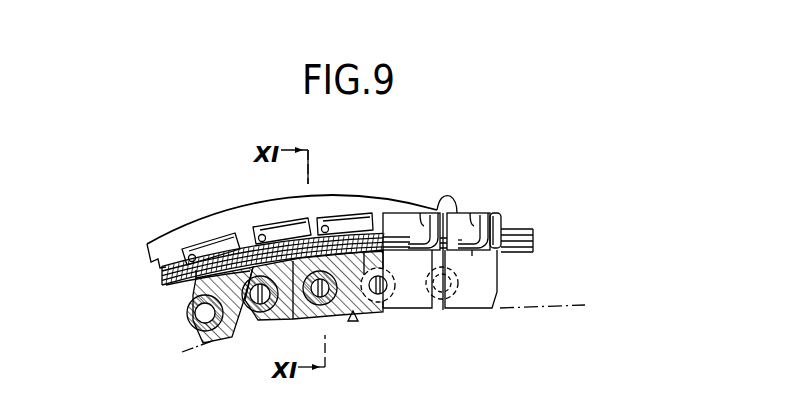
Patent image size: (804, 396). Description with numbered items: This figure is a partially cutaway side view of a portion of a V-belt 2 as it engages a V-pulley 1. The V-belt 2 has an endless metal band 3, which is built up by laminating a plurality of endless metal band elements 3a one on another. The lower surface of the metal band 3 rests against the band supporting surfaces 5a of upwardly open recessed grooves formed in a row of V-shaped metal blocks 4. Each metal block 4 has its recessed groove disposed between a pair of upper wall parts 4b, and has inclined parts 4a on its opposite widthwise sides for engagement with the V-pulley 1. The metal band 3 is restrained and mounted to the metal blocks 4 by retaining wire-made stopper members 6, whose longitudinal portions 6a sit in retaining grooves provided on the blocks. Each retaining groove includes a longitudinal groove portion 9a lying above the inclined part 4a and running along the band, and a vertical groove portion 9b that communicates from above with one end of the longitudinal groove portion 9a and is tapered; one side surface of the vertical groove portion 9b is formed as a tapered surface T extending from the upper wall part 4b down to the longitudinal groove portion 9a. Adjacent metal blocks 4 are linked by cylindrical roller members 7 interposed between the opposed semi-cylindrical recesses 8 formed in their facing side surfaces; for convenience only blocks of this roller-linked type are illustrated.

The V-pulley 1 is at (228, 214).
The V-belt 2 is at (272, 222).
The endless metal band 3 is at (168, 289).
The endless metal band elements 3a is at (168, 295).
The V-shaped metal block 4 is at (397, 230).
The inclined part 4a is at (405, 300).
The upper wall part 4b is at (420, 212).
The band supporting surface 5a is at (293, 319).
The stopper member 6 is at (493, 214).
The longitudinal portion of the stopper member 6a is at (458, 240).
The cylindrical roller member 7 is at (378, 290).
The semi-cylindrical recess 8 is at (353, 321).
The longitudinal groove portion 9a is at (482, 267).
The vertical groove portion 9b is at (503, 229).
The tapered surface T is at (405, 267).